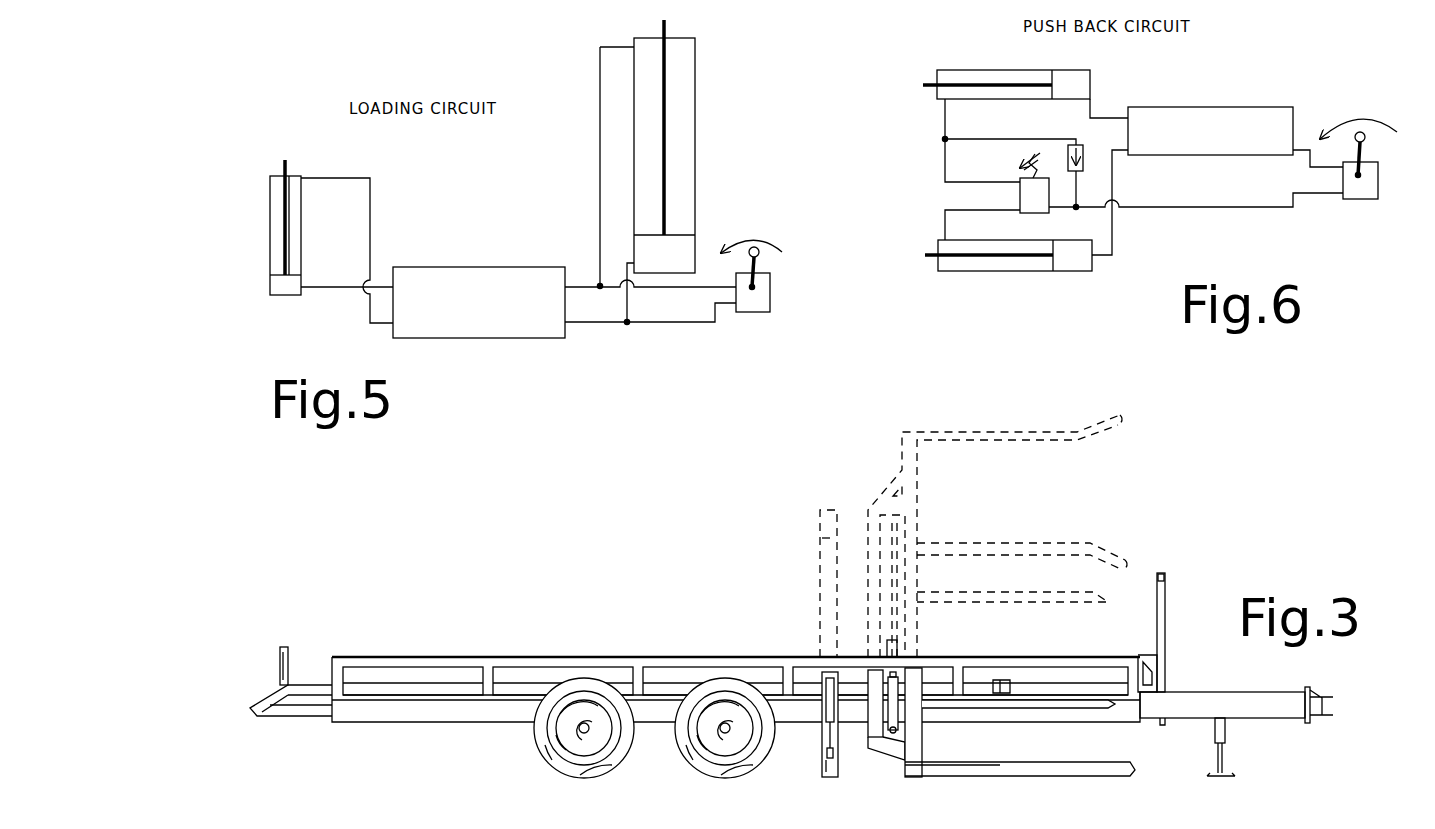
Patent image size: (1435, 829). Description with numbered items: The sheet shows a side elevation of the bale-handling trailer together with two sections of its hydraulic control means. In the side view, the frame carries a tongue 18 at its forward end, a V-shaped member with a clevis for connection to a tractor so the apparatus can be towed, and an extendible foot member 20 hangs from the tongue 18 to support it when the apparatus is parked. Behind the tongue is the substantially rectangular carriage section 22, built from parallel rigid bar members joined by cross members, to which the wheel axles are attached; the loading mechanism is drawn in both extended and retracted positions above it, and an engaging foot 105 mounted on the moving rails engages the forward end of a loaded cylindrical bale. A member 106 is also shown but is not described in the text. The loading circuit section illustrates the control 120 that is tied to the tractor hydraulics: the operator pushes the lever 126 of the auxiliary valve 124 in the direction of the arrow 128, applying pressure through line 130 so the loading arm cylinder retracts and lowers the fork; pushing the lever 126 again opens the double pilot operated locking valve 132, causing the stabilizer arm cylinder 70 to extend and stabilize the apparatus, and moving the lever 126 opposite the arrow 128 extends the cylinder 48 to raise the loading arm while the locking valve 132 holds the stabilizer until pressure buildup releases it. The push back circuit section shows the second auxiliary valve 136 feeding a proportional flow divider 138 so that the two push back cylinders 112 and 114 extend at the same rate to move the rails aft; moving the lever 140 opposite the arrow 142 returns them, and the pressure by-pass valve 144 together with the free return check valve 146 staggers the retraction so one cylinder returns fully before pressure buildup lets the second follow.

In FIG. 3, the tongue 18 is at (1263, 692).
In FIG. 3, the extendible foot member 20 is at (1228, 738).
In FIG. 3, the carriage section 22 is at (428, 710).
In FIG. 5, the loading cylinder 48 is at (688, 210).
In FIG. 5, the stabilizer arm cylinder 70 is at (277, 238).
In FIG. 3, the engaging foot 105 is at (1145, 655).
In FIG. 3, the stop post 106 is at (1165, 592).
In FIG. 6, the push back cylinder 112 is at (995, 75).
In FIG. 6, the push back cylinder 114 is at (1007, 265).
In FIG. 6, the control 120 is at (918, 131).
In FIG. 5, the auxiliary valve 124 is at (770, 301).
In FIG. 5, the auxiliary valve lever 126 is at (761, 264).
In FIG. 5, the arrow 128 is at (762, 238).
In FIG. 5, the line 130 is at (690, 290).
In FIG. 5, the double pilot operated locking valve 132 is at (530, 333).
In FIG. 6, the second auxiliary valve 136 is at (1364, 193).
In FIG. 6, the proportional flow divider 138 is at (1286, 110).
In FIG. 6, the auxiliary valve lever 140 is at (1365, 148).
In FIG. 6, the arrow 142 is at (1360, 117).
In FIG. 6, the pressure by-pass valve 144 is at (1025, 190).
In FIG. 6, the free return check valve 146 is at (1076, 145).